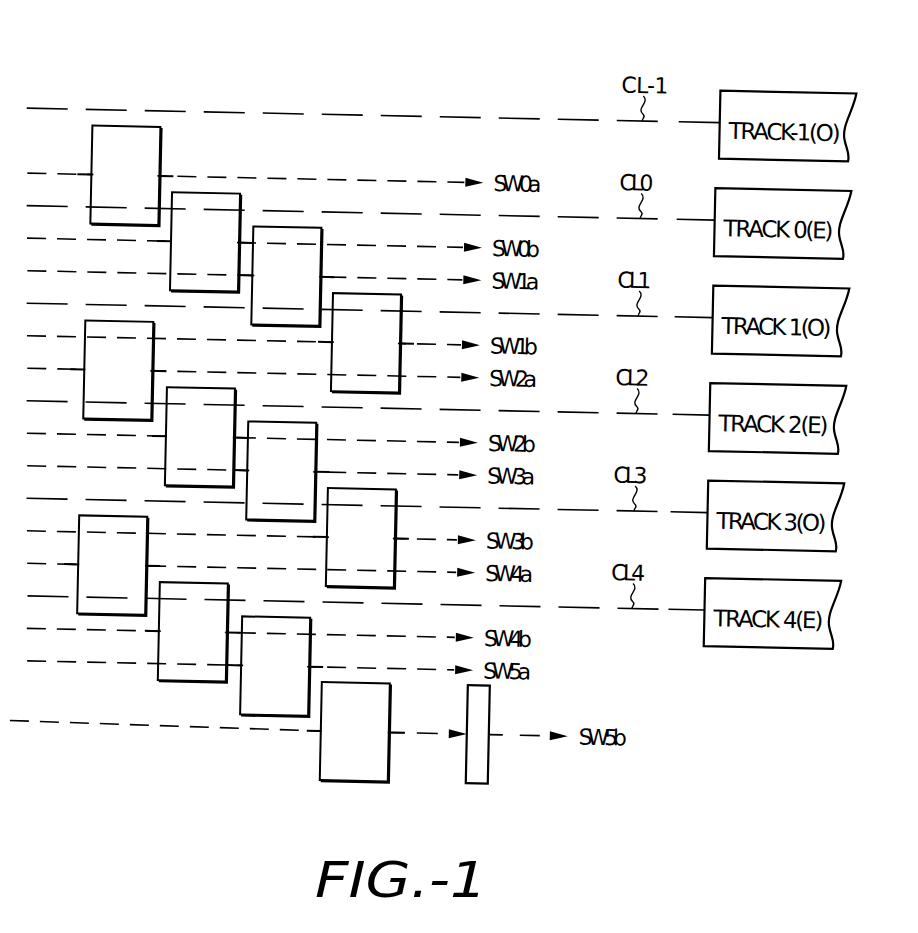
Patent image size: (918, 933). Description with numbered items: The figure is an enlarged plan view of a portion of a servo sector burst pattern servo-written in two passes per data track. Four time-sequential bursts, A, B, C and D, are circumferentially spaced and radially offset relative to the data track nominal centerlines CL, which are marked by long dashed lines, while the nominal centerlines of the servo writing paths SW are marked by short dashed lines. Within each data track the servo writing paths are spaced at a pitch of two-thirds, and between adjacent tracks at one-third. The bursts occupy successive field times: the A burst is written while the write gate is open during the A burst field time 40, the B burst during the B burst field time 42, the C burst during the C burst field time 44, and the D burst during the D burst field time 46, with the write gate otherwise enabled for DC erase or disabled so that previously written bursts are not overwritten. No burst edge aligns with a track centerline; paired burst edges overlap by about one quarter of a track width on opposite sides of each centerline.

The A burst field time 40 is at (94, 7).
The B burst field time 42 is at (178, 7).
The C burst field time 44 is at (261, 7).
The D burst field time 46 is at (341, 7).